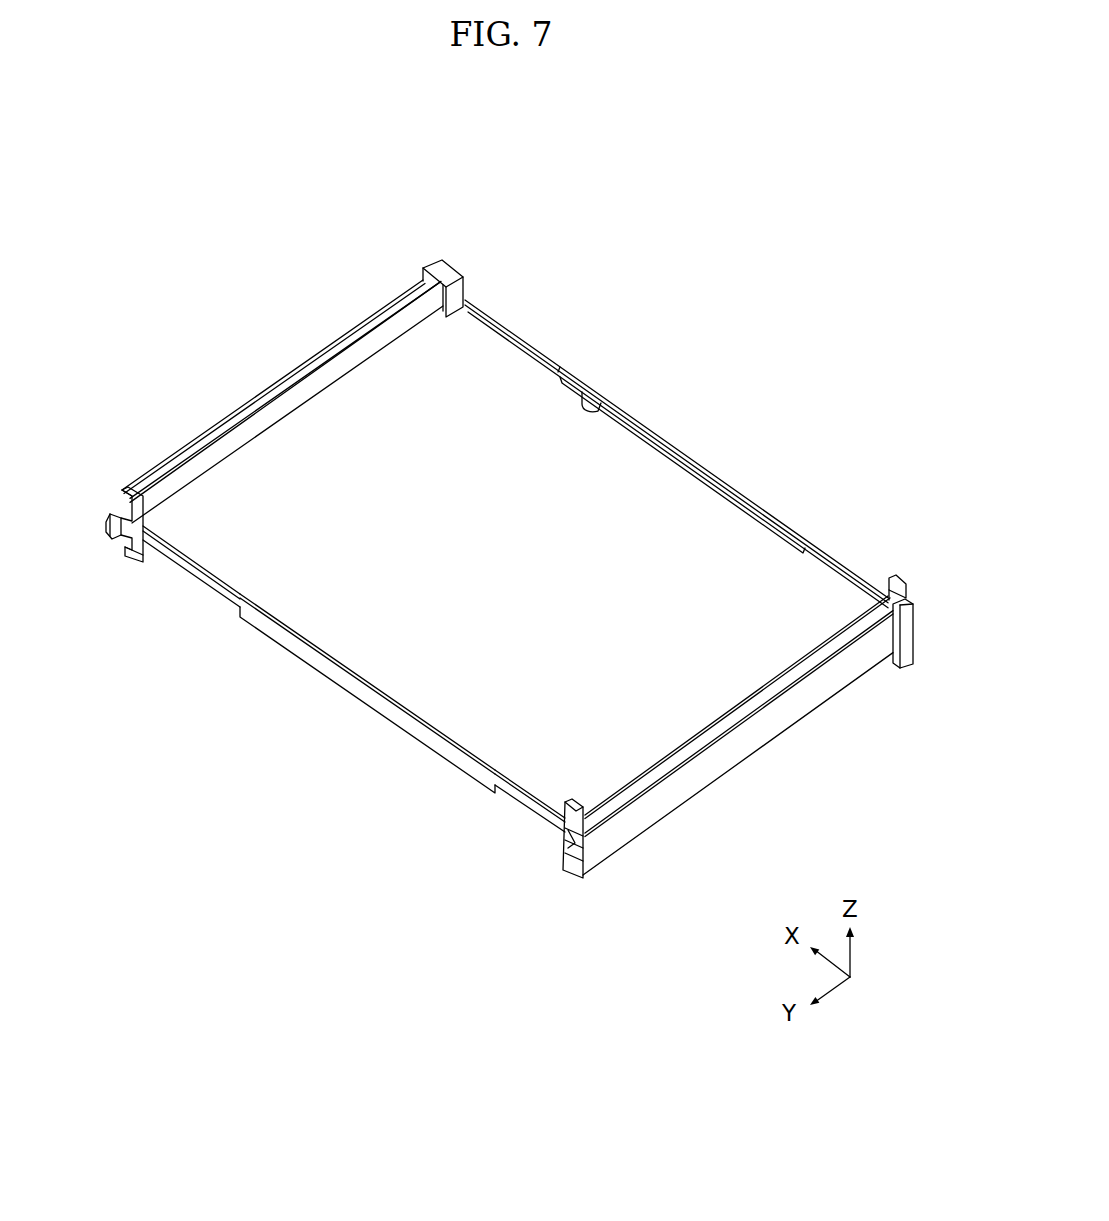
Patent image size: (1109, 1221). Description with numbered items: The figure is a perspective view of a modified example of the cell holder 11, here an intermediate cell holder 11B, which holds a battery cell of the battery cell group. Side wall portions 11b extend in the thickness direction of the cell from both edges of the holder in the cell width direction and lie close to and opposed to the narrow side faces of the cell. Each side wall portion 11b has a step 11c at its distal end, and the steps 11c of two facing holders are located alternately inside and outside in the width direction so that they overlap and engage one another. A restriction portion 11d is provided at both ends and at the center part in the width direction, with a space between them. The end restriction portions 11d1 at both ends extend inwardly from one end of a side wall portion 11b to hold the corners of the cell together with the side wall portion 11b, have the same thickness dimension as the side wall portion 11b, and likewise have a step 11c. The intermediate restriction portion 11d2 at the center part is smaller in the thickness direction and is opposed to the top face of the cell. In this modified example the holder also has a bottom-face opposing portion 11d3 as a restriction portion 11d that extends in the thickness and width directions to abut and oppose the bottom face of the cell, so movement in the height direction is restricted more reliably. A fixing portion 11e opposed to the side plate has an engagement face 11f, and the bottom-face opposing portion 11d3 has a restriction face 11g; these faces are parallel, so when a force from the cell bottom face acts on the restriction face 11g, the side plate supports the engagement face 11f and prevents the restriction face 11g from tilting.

The cell holder 11 is at (499, 543).
The intermediate cell holder 11B is at (745, 283).
The side wall portion 11b is at (198, 433).
The step 11c is at (320, 357).
The restriction portion 11d is at (468, 595).
The end restriction portion 11d1 is at (118, 505).
The intermediate restriction portion 11d2 is at (330, 668).
The bottom-face opposing portion 11d3 is at (706, 465).
The fixing portion 11e is at (436, 264).
The engagement face 11f is at (886, 645).
The restriction face 11g is at (587, 388).